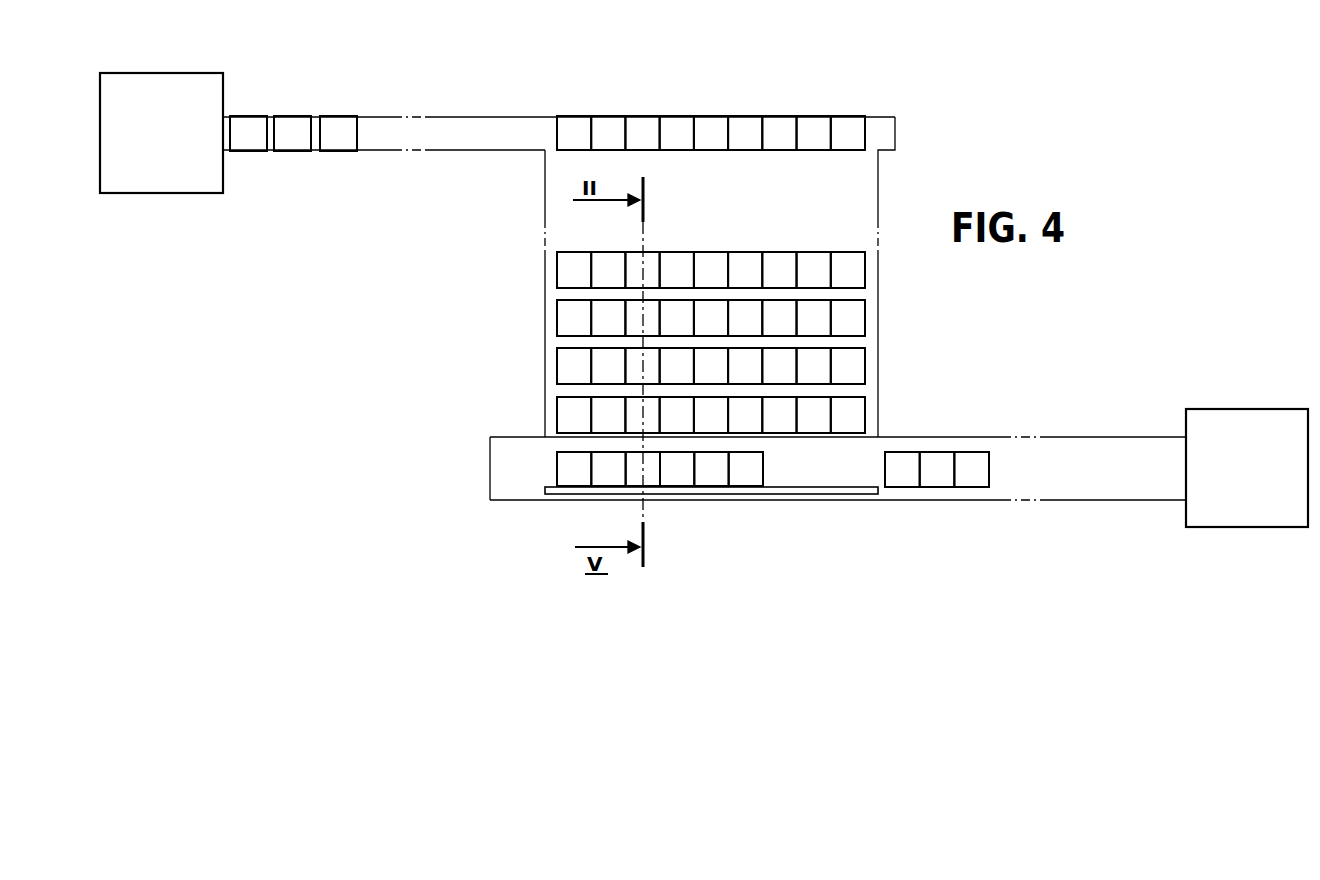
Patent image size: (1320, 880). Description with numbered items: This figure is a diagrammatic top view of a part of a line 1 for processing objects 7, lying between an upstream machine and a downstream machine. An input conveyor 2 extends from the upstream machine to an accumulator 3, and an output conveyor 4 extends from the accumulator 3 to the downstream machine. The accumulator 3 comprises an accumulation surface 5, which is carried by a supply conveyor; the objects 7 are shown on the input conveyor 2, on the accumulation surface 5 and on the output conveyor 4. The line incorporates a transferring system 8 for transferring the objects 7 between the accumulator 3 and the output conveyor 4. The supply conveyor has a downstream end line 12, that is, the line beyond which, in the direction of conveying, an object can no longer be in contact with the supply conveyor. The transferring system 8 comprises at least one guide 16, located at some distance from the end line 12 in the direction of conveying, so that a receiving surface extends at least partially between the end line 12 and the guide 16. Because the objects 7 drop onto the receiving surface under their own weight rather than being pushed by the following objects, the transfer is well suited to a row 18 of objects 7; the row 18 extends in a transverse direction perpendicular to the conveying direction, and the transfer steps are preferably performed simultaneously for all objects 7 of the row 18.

The line 1 is at (423, 245).
The input conveyor 2 is at (459, 133).
The accumulator 3 is at (878, 185).
The output conveyor 4 is at (1119, 484).
The accumulation surface 5 is at (720, 223).
The objects 7 is at (338, 133).
The transferring system 8 is at (522, 405).
The downstream end line 12 is at (552, 437).
The guide 16 is at (841, 498).
The row 18 is at (535, 255).